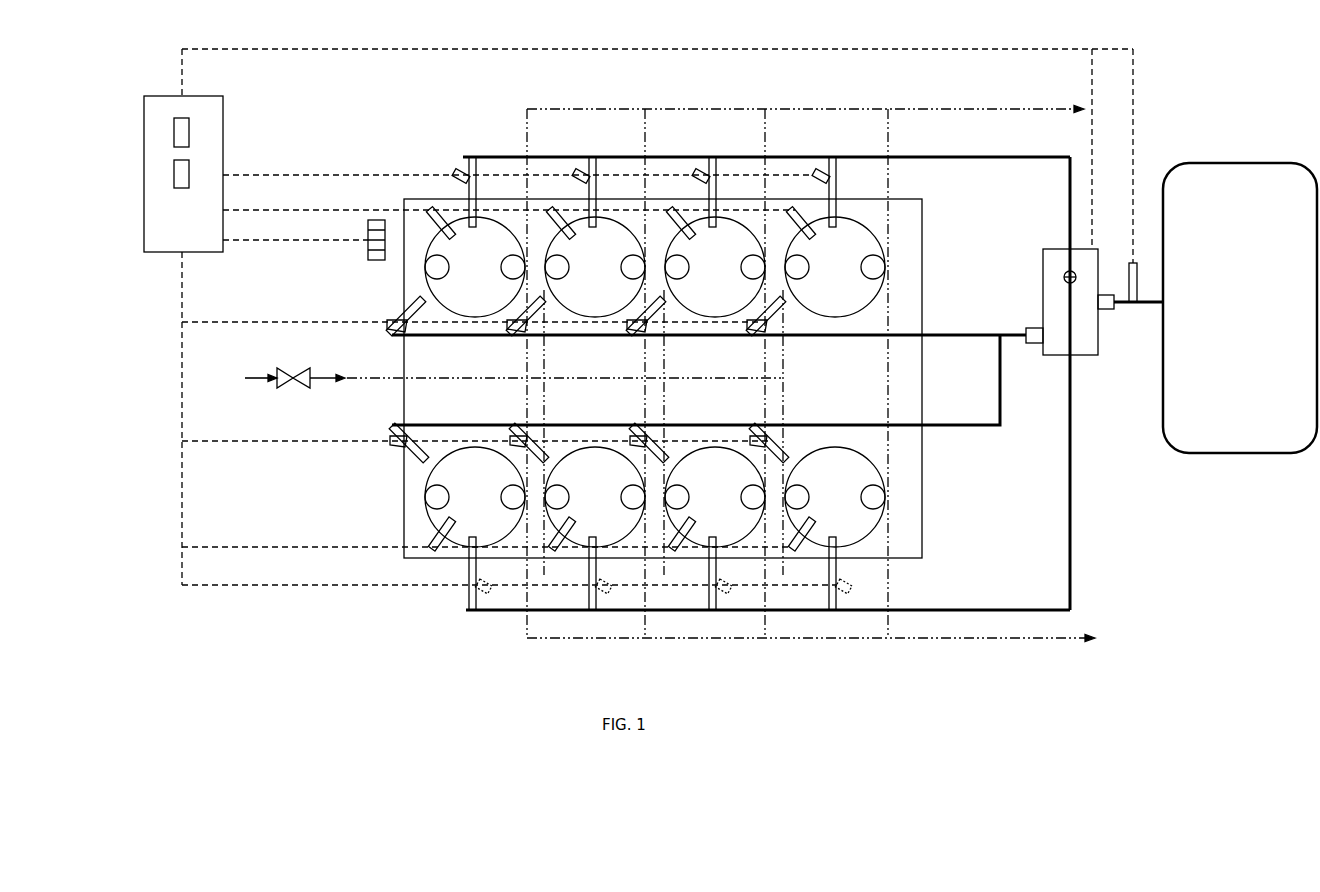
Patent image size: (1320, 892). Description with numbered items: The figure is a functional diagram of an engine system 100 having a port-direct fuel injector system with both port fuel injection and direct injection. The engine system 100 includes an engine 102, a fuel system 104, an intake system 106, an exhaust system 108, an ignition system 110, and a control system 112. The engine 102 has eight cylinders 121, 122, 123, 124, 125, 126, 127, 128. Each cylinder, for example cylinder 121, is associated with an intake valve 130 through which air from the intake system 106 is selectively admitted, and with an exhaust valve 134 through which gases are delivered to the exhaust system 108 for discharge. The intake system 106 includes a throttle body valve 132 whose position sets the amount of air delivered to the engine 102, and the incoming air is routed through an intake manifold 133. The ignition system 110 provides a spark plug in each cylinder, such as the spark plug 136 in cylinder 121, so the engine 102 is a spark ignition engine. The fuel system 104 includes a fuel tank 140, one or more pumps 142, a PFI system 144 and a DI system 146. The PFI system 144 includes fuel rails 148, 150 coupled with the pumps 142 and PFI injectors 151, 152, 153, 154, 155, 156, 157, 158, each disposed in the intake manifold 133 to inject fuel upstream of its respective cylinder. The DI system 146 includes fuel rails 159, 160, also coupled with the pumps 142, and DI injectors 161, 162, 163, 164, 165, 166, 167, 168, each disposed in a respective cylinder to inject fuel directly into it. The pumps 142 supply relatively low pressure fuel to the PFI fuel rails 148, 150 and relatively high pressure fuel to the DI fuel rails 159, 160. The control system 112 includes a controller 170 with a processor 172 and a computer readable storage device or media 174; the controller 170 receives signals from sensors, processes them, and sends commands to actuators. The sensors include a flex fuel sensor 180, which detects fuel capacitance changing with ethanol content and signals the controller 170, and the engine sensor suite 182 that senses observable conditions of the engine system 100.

The engine system 100 is at (725, 31).
The engine 102 is at (931, 232).
The fuel system 104 is at (1150, 473).
The intake system 106 is at (279, 397).
The exhaust system 108 is at (970, 98).
The ignition system 110 is at (345, 328).
The control system 112 is at (129, 86).
The cylinder 121 is at (440, 227).
The cylinder 122 is at (609, 276).
The cylinder 123 is at (729, 276).
The cylinder 124 is at (849, 276).
The cylinder 125 is at (489, 506).
The cylinder 126 is at (609, 506).
The cylinder 127 is at (729, 506).
The cylinder 128 is at (849, 506).
The intake valve 130 is at (427, 268).
The throttle body valve 132 is at (310, 382).
The intake manifold 133 is at (489, 386).
The exhaust valve 134 is at (511, 280).
The spark plug 136 is at (437, 220).
The fuel tank 140 is at (1244, 317).
The pump 142 is at (1078, 345).
The PFI system 144 is at (865, 177).
The DI system 146 is at (800, 432).
The fuel rail 148 is at (695, 335).
The fuel rail 150 is at (692, 425).
The PFI injector 151 is at (421, 332).
The PFI injector 152 is at (547, 330).
The PFI injector 153 is at (650, 335).
The PFI injector 154 is at (782, 333).
The PFI injector 155 is at (402, 452).
The PFI injector 156 is at (534, 436).
The PFI injector 157 is at (640, 437).
The PFI injector 158 is at (773, 432).
The fuel rail 159 is at (492, 156).
The fuel rail 160 is at (490, 612).
The DI injector 161 is at (477, 190).
The DI injector 162 is at (597, 190).
The DI injector 163 is at (717, 190).
The DI injector 164 is at (834, 160).
The DI injector 165 is at (468, 595).
The DI injector 166 is at (590, 595).
The DI injector 167 is at (710, 595).
The DI injector 168 is at (830, 595).
The controller 170 is at (197, 227).
The processor 172 is at (175, 130).
The computer readable storage device or media 174 is at (175, 175).
The flex fuel sensor 180 is at (1137, 280).
The engine sensor suite 182 is at (368, 243).